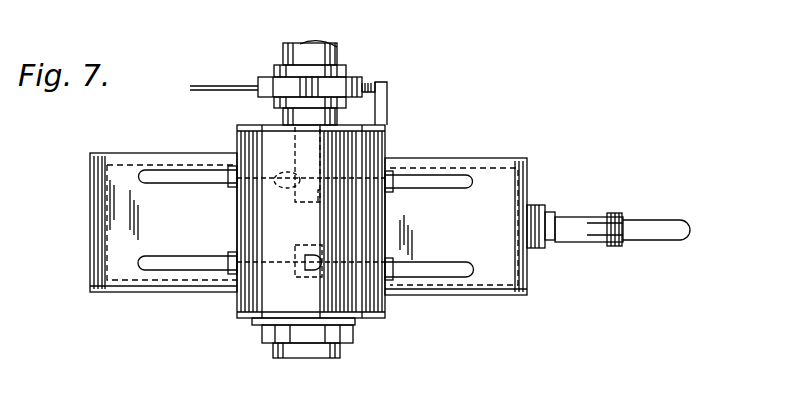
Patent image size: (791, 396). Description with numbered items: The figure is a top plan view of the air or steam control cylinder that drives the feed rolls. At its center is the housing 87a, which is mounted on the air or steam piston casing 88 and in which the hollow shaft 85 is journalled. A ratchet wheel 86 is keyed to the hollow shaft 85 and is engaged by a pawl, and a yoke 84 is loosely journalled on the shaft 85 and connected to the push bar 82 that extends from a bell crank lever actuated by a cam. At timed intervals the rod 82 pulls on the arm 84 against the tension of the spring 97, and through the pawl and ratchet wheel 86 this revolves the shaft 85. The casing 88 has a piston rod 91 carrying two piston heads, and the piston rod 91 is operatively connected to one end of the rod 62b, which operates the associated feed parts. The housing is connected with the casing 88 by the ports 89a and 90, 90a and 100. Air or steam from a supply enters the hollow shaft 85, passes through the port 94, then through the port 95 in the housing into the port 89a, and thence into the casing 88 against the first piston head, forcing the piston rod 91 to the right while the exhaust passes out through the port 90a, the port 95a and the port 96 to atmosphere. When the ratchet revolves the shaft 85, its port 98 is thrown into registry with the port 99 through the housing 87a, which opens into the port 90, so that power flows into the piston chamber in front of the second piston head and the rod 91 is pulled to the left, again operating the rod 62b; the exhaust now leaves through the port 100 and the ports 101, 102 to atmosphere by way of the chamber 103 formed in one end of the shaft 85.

The rod 62b is at (646, 232).
The push bar 82 is at (197, 85).
The yoke 84 is at (340, 78).
The hollow shaft 85 is at (295, 52).
The ratchet wheel 86 is at (266, 85).
The housing 87a is at (380, 212).
The air or steam piston casing 88 is at (480, 172).
The port 89a is at (176, 183).
The port 90 is at (412, 180).
The port 90a is at (440, 272).
The piston rod 91 is at (572, 232).
The port 94 is at (237, 150).
The port 95 is at (255, 158).
The port 95a is at (385, 290).
The port 96 is at (368, 312).
The spring 97 is at (376, 82).
The port 98 is at (386, 118).
The port 99 is at (390, 145).
The port 100 is at (200, 265).
The port 101 is at (250, 282).
The port 102 is at (290, 268).
The chamber 103 is at (313, 297).